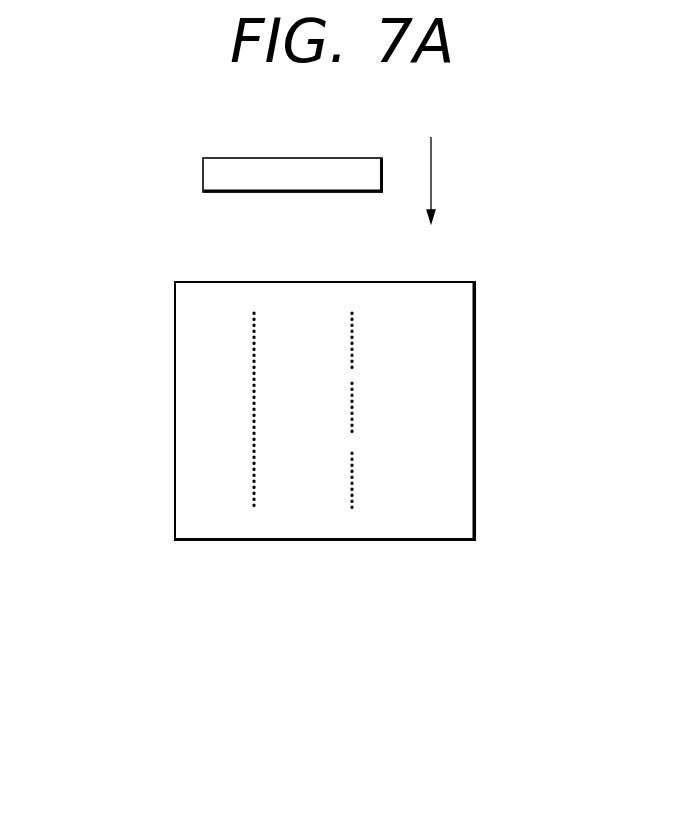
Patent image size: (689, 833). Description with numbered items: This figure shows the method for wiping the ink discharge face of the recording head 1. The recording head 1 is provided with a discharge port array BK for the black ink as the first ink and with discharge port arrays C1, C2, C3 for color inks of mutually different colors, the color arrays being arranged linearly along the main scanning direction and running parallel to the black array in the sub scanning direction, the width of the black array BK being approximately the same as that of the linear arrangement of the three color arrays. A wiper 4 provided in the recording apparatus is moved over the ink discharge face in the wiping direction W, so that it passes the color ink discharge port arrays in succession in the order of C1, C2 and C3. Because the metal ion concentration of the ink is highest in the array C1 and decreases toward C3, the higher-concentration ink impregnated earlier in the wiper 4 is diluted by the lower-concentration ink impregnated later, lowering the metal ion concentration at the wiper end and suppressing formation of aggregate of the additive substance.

The recording head 1 is at (322, 541).
The wiper 4 is at (300, 158).
The wiping direction W is at (446, 180).
The discharge port array for the black ink BK is at (254, 409).
The discharge port array C1 is at (352, 333).
The discharge port array C2 is at (352, 405).
The discharge port array C3 is at (352, 473).